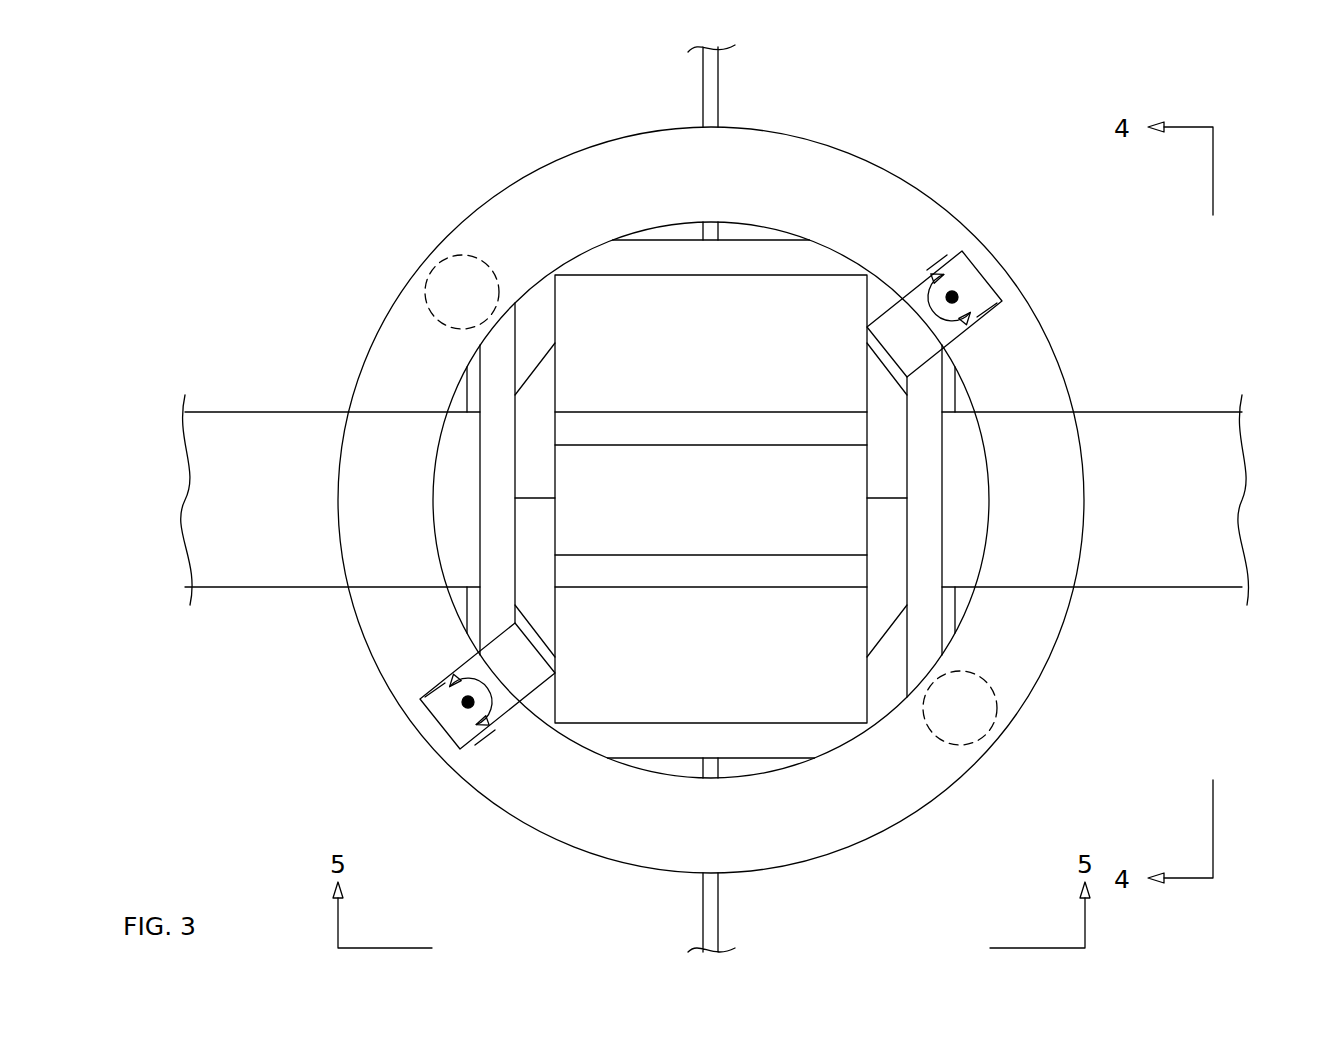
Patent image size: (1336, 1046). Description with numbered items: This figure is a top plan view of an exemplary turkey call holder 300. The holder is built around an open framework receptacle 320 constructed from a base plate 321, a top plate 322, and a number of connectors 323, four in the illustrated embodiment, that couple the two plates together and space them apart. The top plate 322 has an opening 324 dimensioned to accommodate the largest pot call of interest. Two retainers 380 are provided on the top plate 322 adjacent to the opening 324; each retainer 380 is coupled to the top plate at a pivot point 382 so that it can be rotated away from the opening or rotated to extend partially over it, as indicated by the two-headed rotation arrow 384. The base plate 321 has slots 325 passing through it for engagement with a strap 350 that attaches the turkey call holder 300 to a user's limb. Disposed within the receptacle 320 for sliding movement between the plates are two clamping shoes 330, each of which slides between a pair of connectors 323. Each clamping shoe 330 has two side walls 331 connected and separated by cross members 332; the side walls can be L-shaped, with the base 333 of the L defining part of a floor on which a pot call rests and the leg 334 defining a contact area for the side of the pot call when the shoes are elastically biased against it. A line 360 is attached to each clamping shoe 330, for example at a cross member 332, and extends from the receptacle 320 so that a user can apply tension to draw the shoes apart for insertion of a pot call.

The turkey call holder 300 is at (256, 122).
The open framework receptacle 320 is at (636, 122).
The base plate 321 is at (686, 513).
The top plate 322 is at (517, 218).
The connectors 323 is at (435, 265).
The opening 324 is at (795, 235).
The slots 325 is at (465, 395).
The clamping shoes 330 is at (500, 433).
The side walls 331 is at (535, 318).
The cross members 332 is at (692, 258).
The base 333 is at (540, 457).
The leg 334 is at (530, 376).
The strap 350 is at (235, 440).
The line 360 is at (720, 228).
The retainers 380 is at (480, 662).
The pivot point 382 is at (440, 708).
The two-headed rotation arrow 384 is at (500, 718).